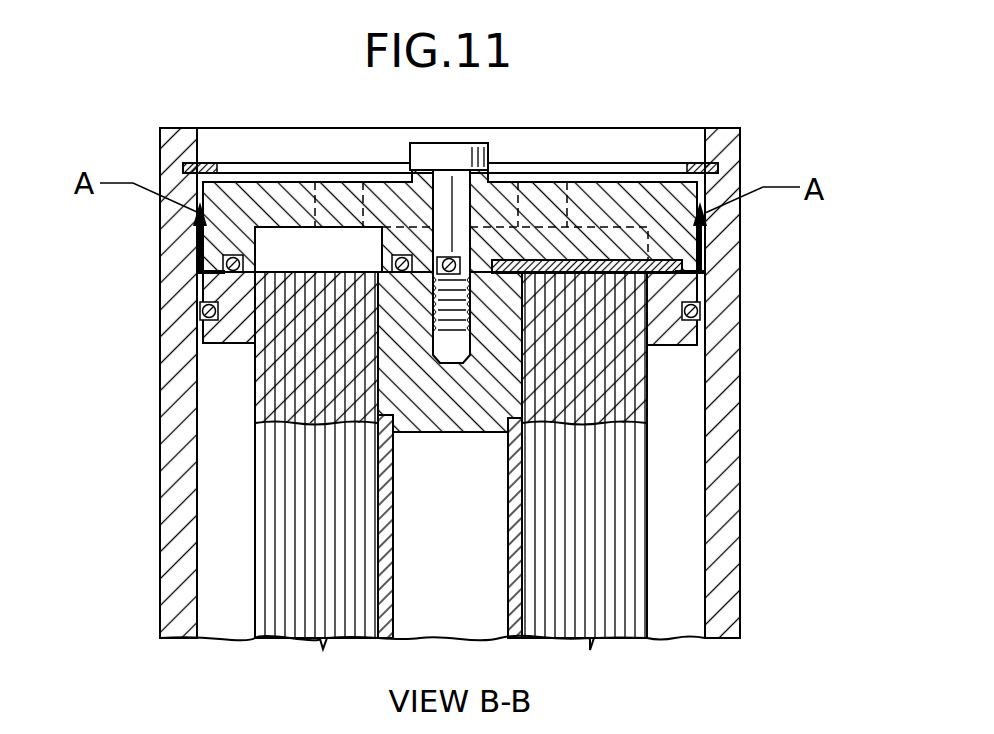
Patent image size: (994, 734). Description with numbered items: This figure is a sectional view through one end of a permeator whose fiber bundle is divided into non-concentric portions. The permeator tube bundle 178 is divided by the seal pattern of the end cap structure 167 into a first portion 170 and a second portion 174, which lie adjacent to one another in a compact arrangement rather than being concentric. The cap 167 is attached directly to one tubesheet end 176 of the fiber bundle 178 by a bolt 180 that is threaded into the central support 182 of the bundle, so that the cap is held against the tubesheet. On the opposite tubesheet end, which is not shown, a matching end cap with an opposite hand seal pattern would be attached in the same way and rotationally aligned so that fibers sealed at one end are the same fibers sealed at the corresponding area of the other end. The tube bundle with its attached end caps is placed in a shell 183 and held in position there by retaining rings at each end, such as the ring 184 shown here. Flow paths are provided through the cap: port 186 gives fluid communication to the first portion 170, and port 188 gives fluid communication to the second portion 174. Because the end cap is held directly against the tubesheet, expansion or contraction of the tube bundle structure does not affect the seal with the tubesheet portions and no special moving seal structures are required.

The end cap structure 167 is at (715, 178).
The first portion 170 is at (632, 498).
The second portion 174 is at (277, 593).
The tubesheet end 176 is at (185, 167).
The tube bundle 178 is at (648, 588).
The bolt 180 is at (447, 143).
The central support 182 is at (410, 430).
The shell 183 is at (160, 477).
The retaining ring 184 is at (205, 207).
The port 186 is at (545, 188).
The port 188 is at (346, 185).